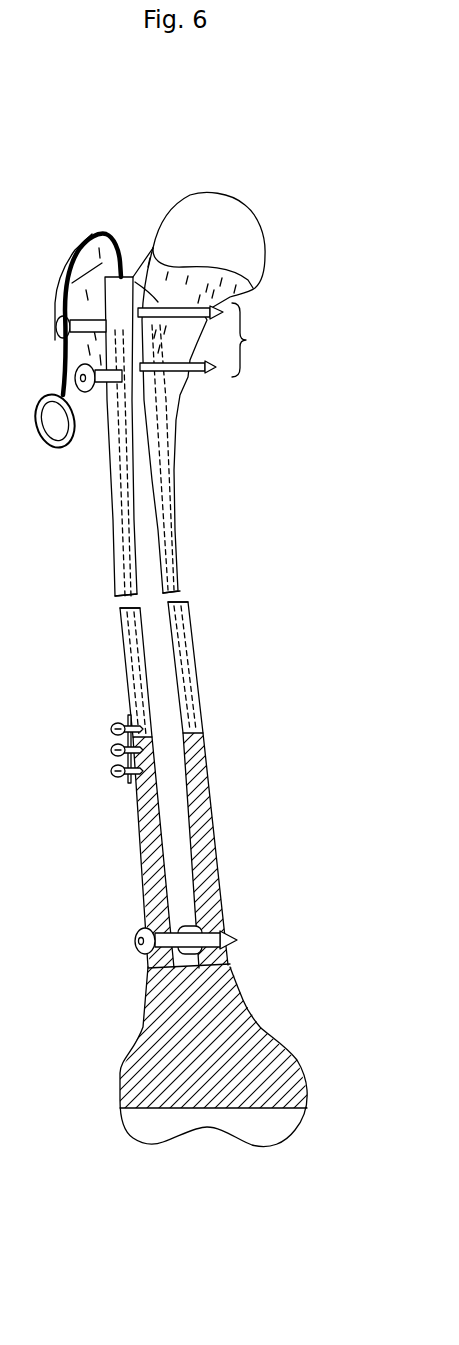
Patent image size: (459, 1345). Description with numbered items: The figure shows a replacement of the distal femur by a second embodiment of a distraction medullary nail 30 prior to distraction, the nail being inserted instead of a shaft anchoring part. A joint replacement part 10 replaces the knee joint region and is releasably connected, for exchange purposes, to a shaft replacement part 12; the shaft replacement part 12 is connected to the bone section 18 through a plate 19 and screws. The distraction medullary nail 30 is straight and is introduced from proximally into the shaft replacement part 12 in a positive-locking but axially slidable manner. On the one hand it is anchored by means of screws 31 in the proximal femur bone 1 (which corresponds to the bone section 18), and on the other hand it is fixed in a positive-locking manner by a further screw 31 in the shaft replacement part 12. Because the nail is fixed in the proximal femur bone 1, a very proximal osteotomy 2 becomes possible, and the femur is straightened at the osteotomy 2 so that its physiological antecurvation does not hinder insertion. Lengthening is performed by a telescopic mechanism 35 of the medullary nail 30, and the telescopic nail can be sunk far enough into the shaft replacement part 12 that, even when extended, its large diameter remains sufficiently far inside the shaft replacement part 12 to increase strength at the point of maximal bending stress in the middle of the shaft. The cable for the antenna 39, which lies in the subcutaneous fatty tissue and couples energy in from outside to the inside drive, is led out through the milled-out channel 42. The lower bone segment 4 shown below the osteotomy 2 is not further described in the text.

The proximal femur bone 1 is at (86, 436).
The bone section 18 is at (120, 530).
The osteotomy 2 is at (175, 600).
The distal bone segment 4 is at (188, 683).
The joint replacement part 10 is at (210, 1048).
The shaft replacement part 12 is at (205, 853).
The plate 19 is at (112, 745).
The distraction medullary nail 30 is at (143, 512).
The screws 31 is at (268, 962).
The telescopic mechanism 35 is at (207, 930).
The antenna 39 is at (55, 424).
The milled-out channel 42 is at (127, 262).